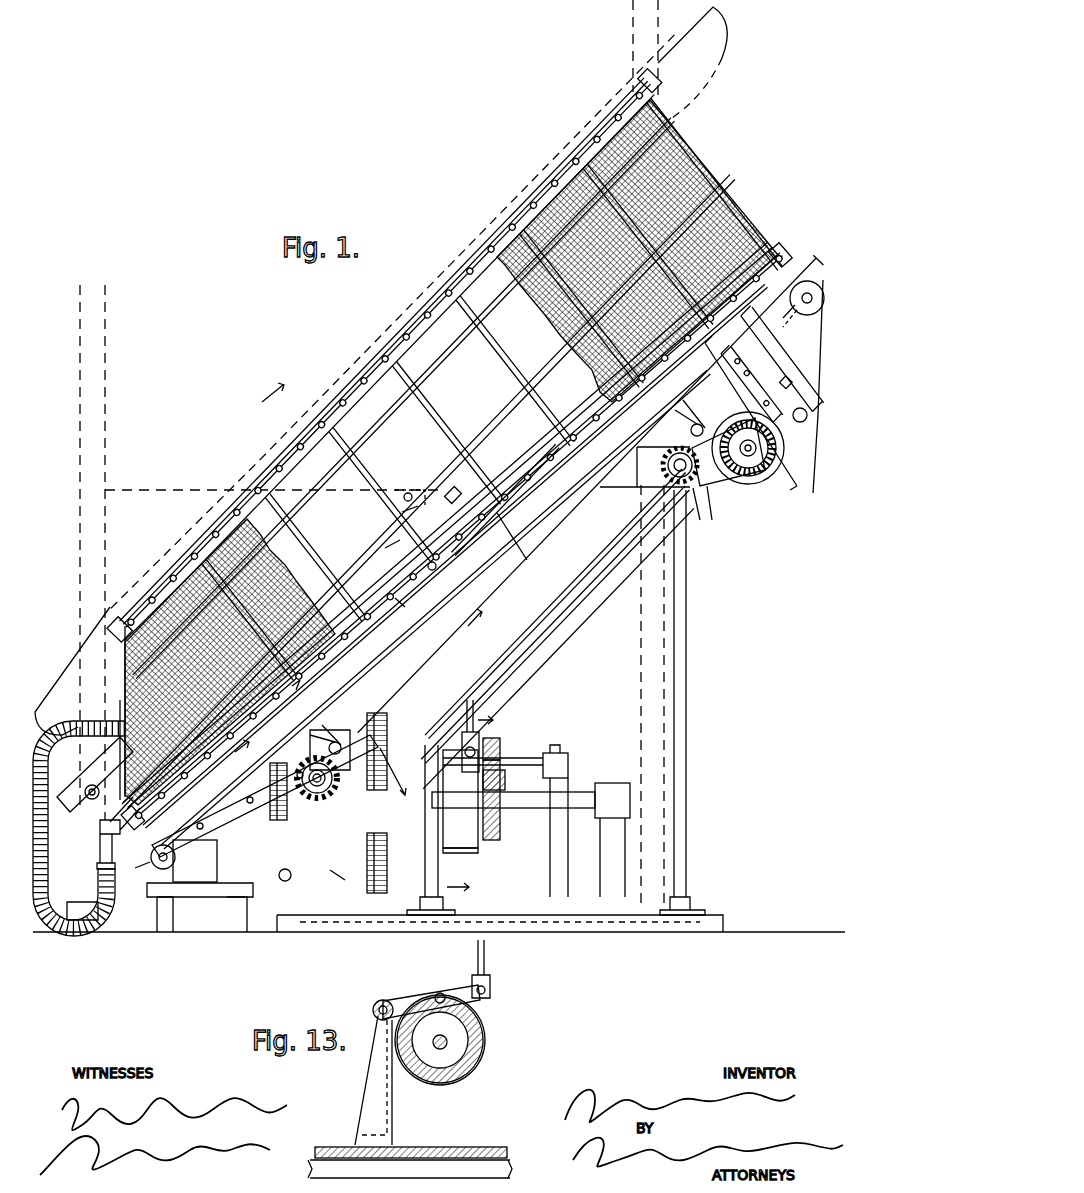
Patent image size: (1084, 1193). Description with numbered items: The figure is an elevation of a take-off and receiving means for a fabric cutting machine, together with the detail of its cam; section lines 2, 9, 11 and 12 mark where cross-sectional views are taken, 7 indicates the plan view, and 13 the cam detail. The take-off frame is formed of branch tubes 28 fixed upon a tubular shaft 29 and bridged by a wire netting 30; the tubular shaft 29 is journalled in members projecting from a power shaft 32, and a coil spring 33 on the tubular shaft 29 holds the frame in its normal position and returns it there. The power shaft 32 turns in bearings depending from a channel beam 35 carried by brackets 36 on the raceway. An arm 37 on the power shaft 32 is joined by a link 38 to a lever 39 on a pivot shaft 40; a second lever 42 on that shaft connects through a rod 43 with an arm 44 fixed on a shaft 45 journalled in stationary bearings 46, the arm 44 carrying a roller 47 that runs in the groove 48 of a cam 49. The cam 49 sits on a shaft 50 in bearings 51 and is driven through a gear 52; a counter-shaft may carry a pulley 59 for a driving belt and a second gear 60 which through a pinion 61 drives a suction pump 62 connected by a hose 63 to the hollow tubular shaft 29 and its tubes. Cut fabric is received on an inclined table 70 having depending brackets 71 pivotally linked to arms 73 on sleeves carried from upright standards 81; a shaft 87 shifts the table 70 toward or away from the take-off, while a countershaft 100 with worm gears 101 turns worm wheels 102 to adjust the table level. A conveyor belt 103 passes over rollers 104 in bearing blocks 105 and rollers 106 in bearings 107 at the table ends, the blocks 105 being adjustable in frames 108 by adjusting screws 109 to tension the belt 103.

In FIG. 1, the cross-section line 2 is at (377, 495).
In FIG. 1, the plan view line 7 is at (796, 262).
In FIG. 1, the section line 9- 9 is at (741, 418).
In FIG. 1, the section line 11- 11 is at (351, 746).
In FIG. 1, the section line 12- 12 is at (296, 808).
In FIG. 1, the cam detail view 13 is at (479, 800).
In FIG. 1, the branch tubes 28 is at (503, 343).
In FIG. 1, the tubular shaft 29 is at (350, 626).
In FIG. 1, the wire netting 30 is at (535, 300).
In FIG. 1, the power shaft 32 is at (408, 600).
In FIG. 1, the coil spring 33 is at (505, 508).
In FIG. 1, the channel beam 35 is at (560, 332).
In FIG. 1, the brackets 36 is at (496, 376).
In FIG. 1, the arm 37 is at (442, 563).
In FIG. 1, the link 38 is at (392, 546).
In FIG. 1, the lever 39 is at (405, 492).
In FIG. 1, the pivot shaft 40 is at (408, 515).
In FIG. 1, the second lever 42 is at (453, 490).
In FIG. 1, the rod 43 is at (470, 650).
In FIG. 13, the rod 43 is at (485, 952).
In FIG. 1, the arm 44 is at (470, 770).
In FIG. 13, the arm 44 is at (402, 1002).
In FIG. 1, the shaft 45 is at (545, 752).
In FIG. 13, the shaft 45 is at (375, 1003).
In FIG. 1, the stationary bearings 46 is at (437, 845).
In FIG. 13, the stationary bearings 46 is at (372, 1073).
In FIG. 1, the roller 47 is at (500, 748).
In FIG. 13, the roller 47 is at (441, 990).
In FIG. 1, the groove 48 is at (500, 840).
In FIG. 13, the groove 48 is at (484, 1040).
In FIG. 1, the cam 49 is at (505, 780).
In FIG. 13, the cam 49 is at (475, 1060).
In FIG. 1, the shaft 50 is at (515, 805).
In FIG. 13, the shaft 50 is at (437, 1050).
In FIG. 1, the bearings 51 is at (612, 840).
In FIG. 1, the gear 52 is at (380, 715).
In FIG. 1, the pulley 59 is at (478, 852).
In FIG. 1, the second gear 60 is at (300, 768).
In FIG. 1, the pinion 61 is at (285, 815).
In FIG. 1, the suction pump 62 is at (265, 796).
In FIG. 1, the hose 63 is at (40, 835).
In FIG. 1, the table 70 is at (372, 660).
In FIG. 1, the depending brackets 71 is at (345, 720).
In FIG. 1, the arms 73 is at (676, 452).
In FIG. 1, the upright standards 81 is at (688, 800).
In FIG. 1, the shaft 87 is at (570, 590).
In FIG. 1, the countershaft 100 is at (562, 628).
In FIG. 1, the worm gears 101 is at (715, 500).
In FIG. 1, the worm wheels 102 is at (640, 488).
In FIG. 1, the conveyor belt 103 is at (535, 672).
In FIG. 1, the rollers 104 is at (803, 425).
In FIG. 1, the bearing blocks 105 is at (765, 415).
In FIG. 1, the rollers 106 is at (809, 315).
In FIG. 1, the bearings 107 is at (143, 876).
In FIG. 1, the frames 108 is at (777, 358).
In FIG. 1, the adjusting screws 109 is at (770, 385).